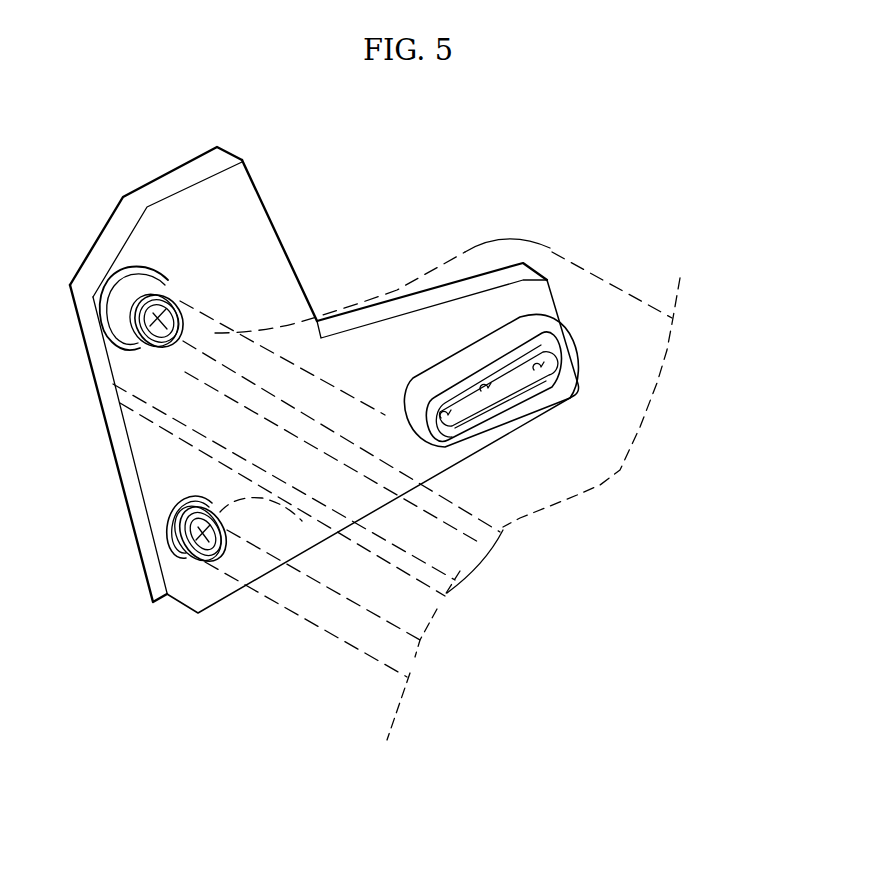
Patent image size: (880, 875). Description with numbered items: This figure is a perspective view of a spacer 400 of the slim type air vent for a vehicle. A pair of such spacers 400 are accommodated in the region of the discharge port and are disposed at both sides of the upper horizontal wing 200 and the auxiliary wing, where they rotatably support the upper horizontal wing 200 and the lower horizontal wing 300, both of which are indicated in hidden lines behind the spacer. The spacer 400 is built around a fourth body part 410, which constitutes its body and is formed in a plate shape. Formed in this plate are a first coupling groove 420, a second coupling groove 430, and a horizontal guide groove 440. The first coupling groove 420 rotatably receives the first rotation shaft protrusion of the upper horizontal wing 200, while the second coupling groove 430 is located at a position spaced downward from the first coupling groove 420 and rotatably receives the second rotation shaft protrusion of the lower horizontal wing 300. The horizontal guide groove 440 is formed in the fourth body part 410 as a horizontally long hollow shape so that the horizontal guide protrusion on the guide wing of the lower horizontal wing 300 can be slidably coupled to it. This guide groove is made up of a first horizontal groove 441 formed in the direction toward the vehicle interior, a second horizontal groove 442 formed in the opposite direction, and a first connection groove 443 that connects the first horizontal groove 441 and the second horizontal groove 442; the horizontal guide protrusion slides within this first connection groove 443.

The upper horizontal wing 200 is at (649, 293).
The lower horizontal wing 300 is at (322, 647).
The spacer 400 is at (271, 176).
The fourth body part 410 is at (286, 262).
The first coupling groove 420 is at (172, 292).
The second coupling groove 430 is at (187, 556).
The horizontal guide groove 440 is at (559, 446).
The first horizontal groove 441 is at (452, 428).
The second horizontal groove 442 is at (570, 389).
The first connection groove 443 is at (492, 390).